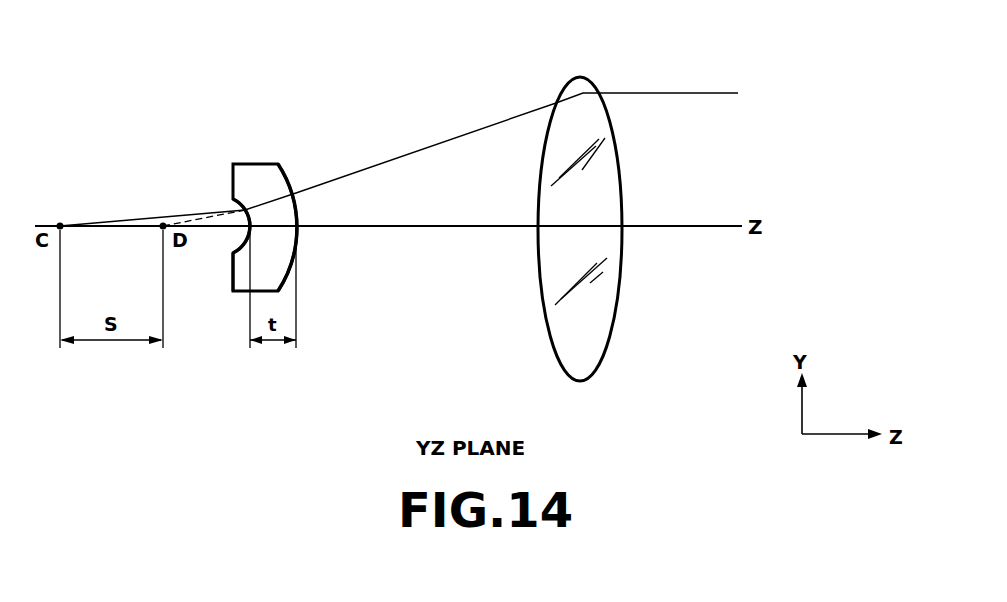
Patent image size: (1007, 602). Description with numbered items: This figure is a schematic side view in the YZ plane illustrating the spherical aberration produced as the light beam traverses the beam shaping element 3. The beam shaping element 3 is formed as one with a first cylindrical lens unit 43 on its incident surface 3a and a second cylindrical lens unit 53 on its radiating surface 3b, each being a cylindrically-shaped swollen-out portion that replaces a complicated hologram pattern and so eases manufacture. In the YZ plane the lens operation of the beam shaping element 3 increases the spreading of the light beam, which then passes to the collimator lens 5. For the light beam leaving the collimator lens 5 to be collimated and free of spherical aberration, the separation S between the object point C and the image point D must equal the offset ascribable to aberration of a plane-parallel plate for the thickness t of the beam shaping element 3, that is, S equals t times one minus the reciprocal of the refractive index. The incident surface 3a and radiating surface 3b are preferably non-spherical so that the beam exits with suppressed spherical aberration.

The beam shaping element 3 is at (249, 216).
The incident surface 3a is at (233, 200).
The radiating surface 3b is at (290, 178).
The collimator lens 5 is at (583, 92).
The first cylindrical lens unit 43 is at (233, 247).
The second cylindrical lens unit 53 is at (300, 215).